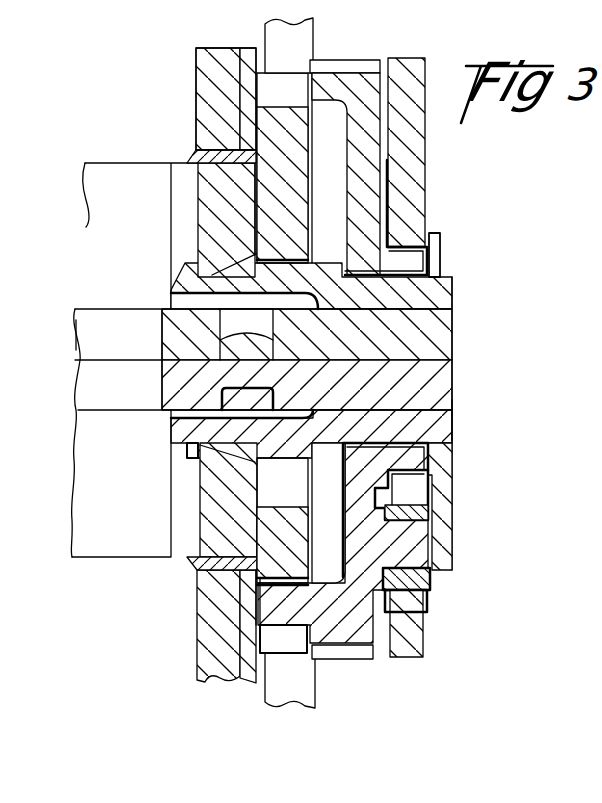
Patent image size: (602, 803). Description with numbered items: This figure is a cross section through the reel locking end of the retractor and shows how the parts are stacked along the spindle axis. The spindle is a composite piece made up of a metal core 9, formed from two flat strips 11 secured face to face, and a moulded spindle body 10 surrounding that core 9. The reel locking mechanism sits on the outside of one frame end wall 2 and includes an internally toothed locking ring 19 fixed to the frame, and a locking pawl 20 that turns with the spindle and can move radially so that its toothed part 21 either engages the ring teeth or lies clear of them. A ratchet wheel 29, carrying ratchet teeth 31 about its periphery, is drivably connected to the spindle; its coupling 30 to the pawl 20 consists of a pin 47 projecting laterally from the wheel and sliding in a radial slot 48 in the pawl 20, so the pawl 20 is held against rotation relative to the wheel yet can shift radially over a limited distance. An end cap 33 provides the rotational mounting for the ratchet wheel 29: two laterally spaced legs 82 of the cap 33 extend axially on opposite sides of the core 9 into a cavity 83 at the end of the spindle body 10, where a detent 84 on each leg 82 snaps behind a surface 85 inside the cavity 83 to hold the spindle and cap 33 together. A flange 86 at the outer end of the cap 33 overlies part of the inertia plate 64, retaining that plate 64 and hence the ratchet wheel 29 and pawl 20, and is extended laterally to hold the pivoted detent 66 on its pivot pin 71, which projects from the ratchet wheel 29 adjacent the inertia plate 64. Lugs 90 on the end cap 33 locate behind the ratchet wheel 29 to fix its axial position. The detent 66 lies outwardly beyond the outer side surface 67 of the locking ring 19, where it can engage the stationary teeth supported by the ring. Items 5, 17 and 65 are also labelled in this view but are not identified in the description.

The frame end wall 2 is at (218, 103).
The housing 5 is at (597, 467).
The metal core 9 is at (118, 395).
The spindle body 10 is at (92, 538).
The flat strips 11 is at (427, 375).
The frame 17 is at (589, 625).
The locking ring 19 is at (298, 36).
The locking pawl 20 is at (284, 133).
The toothed part 21 is at (295, 90).
The ratchet wheel 29 is at (368, 180).
The coupling 30 is at (297, 640).
The ratchet teeth 31 is at (357, 65).
The end cap 33 is at (460, 420).
The pin 47 is at (277, 602).
The radial slot 48 is at (275, 641).
The inertia plate 64 is at (410, 197).
The bolt 65 is at (437, 257).
The detent 66 is at (420, 580).
The outer side surface 67 is at (302, 692).
The pivot pin 71 is at (418, 540).
The legs 82 is at (218, 437).
The cavity 83 is at (187, 193).
The detent 84 is at (187, 452).
The surface 85 is at (200, 487).
The flange 86 is at (443, 473).
The lugs 90 is at (325, 268).